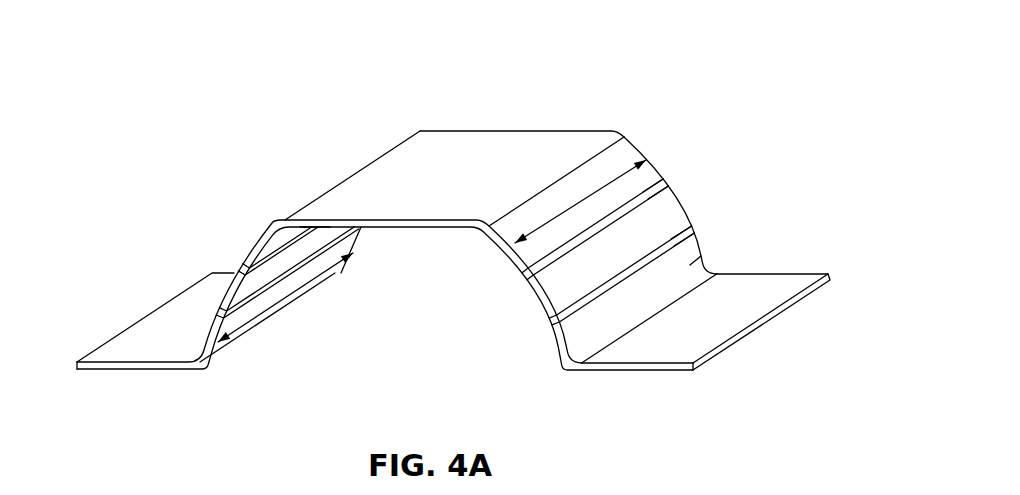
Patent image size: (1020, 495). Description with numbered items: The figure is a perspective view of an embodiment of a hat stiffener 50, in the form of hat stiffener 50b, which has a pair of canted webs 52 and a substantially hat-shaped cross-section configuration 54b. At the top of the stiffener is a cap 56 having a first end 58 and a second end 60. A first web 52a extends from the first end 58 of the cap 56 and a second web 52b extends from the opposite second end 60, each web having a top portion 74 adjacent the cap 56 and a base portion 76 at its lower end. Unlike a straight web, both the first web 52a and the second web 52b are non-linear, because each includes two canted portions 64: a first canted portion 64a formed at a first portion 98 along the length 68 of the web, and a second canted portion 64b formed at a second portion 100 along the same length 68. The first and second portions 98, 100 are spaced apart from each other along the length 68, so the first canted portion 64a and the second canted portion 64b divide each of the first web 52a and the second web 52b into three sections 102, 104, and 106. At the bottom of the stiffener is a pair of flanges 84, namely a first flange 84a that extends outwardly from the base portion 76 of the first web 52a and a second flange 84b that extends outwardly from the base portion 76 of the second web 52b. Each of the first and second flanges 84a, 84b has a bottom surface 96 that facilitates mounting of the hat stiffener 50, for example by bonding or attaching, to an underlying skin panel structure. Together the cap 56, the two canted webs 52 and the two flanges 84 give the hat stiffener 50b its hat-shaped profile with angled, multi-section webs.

The hat stiffener 50 is at (426, 78).
The hat stiffener 50b is at (501, 104).
The canted webs 52 is at (255, 225).
The first web 52a is at (252, 327).
The second web 52b is at (586, 330).
The hat-shaped cross-section configuration 54b is at (411, 270).
The cap 56 is at (436, 187).
The first end 58 is at (352, 172).
The second end 60 is at (578, 162).
The canted portions 64 is at (638, 303).
The first canted portion 64a is at (246, 266).
The second canted portion 64b is at (221, 309).
The length 68 is at (290, 296).
The top portion 74 is at (281, 215).
The base portion 76 is at (198, 364).
The flanges 84 is at (130, 312).
The first flange 84a is at (142, 353).
The second flange 84b is at (681, 348).
The bottom surface 96 is at (92, 372).
The first portion 98 is at (673, 192).
The second portion 100 is at (687, 235).
The section 102 is at (653, 170).
The section 104 is at (667, 217).
The section 106 is at (683, 267).